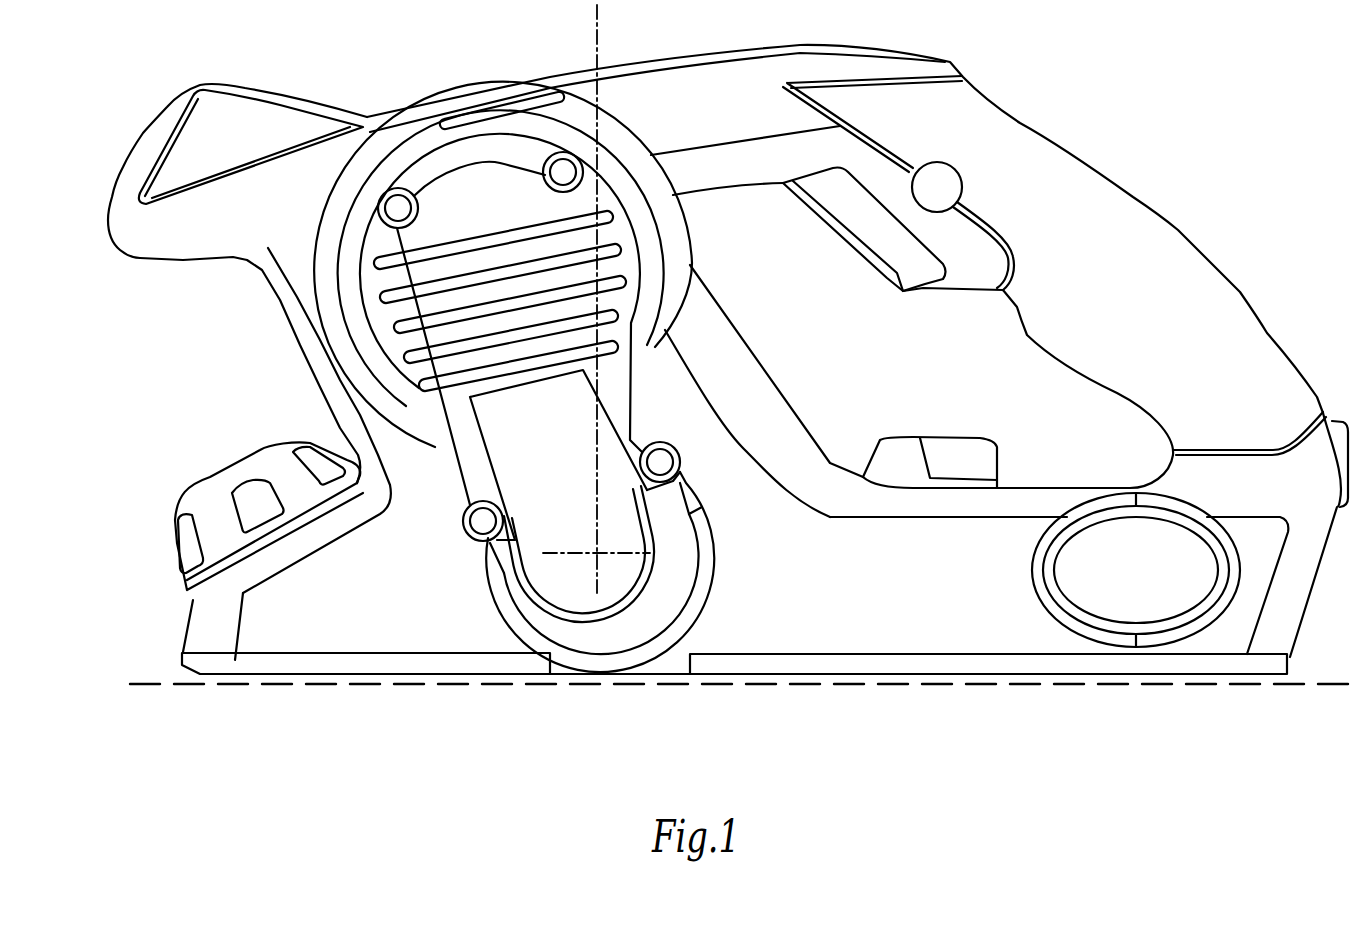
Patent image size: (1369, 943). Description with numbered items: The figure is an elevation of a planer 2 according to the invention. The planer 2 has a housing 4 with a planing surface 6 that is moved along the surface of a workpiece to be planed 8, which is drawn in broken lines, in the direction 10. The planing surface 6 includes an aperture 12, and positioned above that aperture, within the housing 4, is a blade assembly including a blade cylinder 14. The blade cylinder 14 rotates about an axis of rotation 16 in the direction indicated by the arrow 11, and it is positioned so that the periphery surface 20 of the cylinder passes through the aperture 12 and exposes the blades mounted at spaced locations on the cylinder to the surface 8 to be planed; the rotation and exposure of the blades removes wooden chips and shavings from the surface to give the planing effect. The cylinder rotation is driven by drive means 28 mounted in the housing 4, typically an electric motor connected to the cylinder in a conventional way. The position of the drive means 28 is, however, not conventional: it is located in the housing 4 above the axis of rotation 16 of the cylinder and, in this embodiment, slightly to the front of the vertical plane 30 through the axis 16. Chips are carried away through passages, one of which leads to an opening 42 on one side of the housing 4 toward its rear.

The planer 2 is at (522, 703).
The housing 4 is at (820, 490).
The planing surface 6 is at (1005, 684).
The workpiece surface to be planed 8 is at (193, 686).
The direction 10 is at (290, 707).
The arrow 11 is at (474, 612).
The aperture 12 is at (558, 674).
The blade cylinder 14 is at (614, 662).
The axis of rotation 16 is at (612, 553).
The periphery surface 20 is at (645, 668).
The drive means 28 is at (493, 262).
The vertical plane 30 is at (597, 25).
The opening 42 is at (1137, 587).